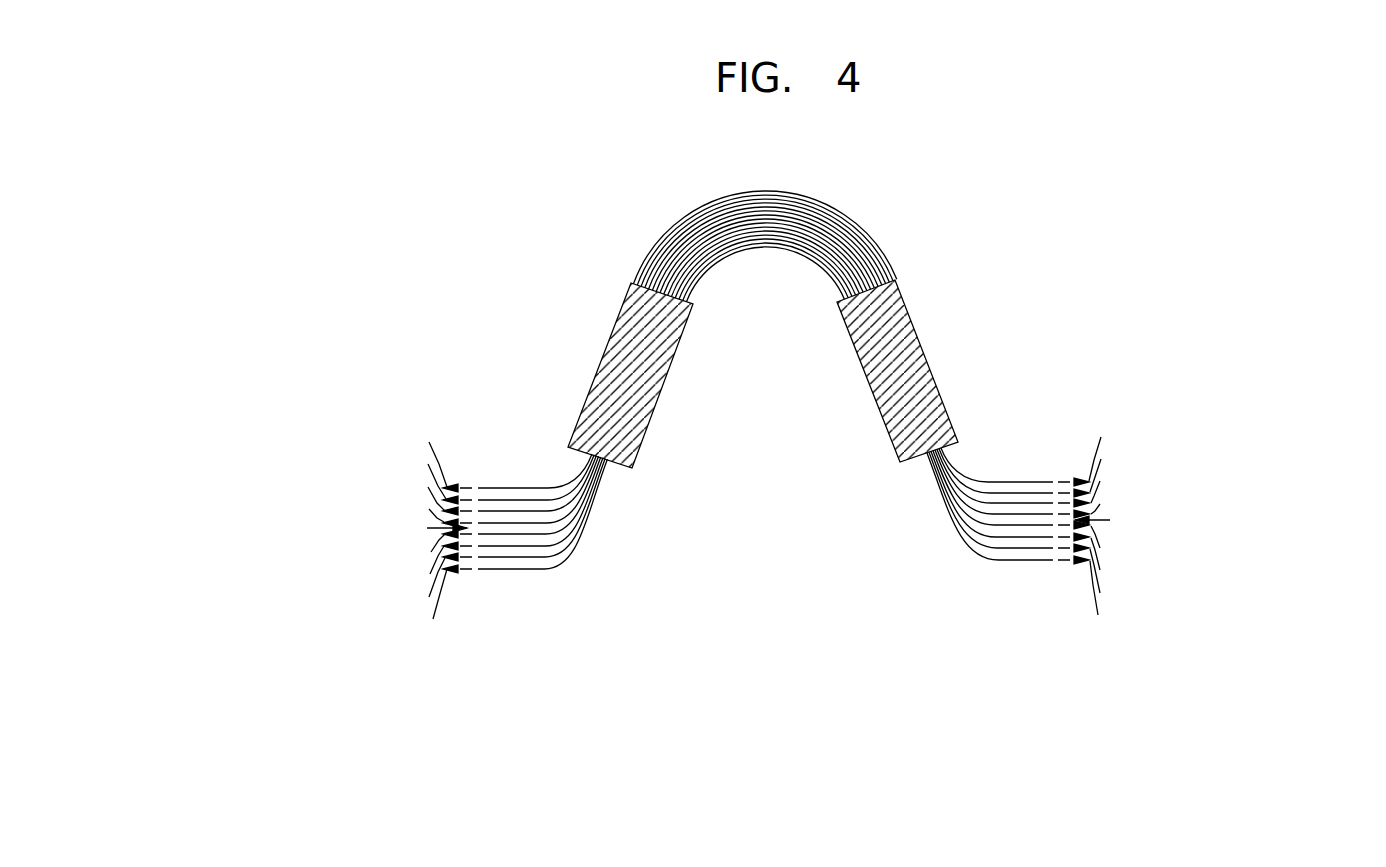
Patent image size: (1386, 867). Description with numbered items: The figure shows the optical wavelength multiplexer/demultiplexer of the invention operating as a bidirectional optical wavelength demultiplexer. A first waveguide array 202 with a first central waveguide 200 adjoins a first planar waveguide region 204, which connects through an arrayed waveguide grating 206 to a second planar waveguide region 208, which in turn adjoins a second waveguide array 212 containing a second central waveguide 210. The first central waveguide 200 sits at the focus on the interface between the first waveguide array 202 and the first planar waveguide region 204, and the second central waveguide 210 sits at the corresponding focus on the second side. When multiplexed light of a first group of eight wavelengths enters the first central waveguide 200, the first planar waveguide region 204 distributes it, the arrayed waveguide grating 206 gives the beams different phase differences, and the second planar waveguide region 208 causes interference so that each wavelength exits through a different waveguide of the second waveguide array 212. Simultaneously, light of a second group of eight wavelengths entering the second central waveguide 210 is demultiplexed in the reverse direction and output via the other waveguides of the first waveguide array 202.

The first central waveguide 200 is at (495, 528).
The first waveguide array 202 is at (535, 597).
The first planar waveguide region 204 is at (602, 357).
The arrayed waveguide grating 206 is at (838, 213).
The second planar waveguide region 208 is at (918, 326).
The second central waveguide 210 is at (1020, 520).
The second waveguide array 212 is at (1002, 585).